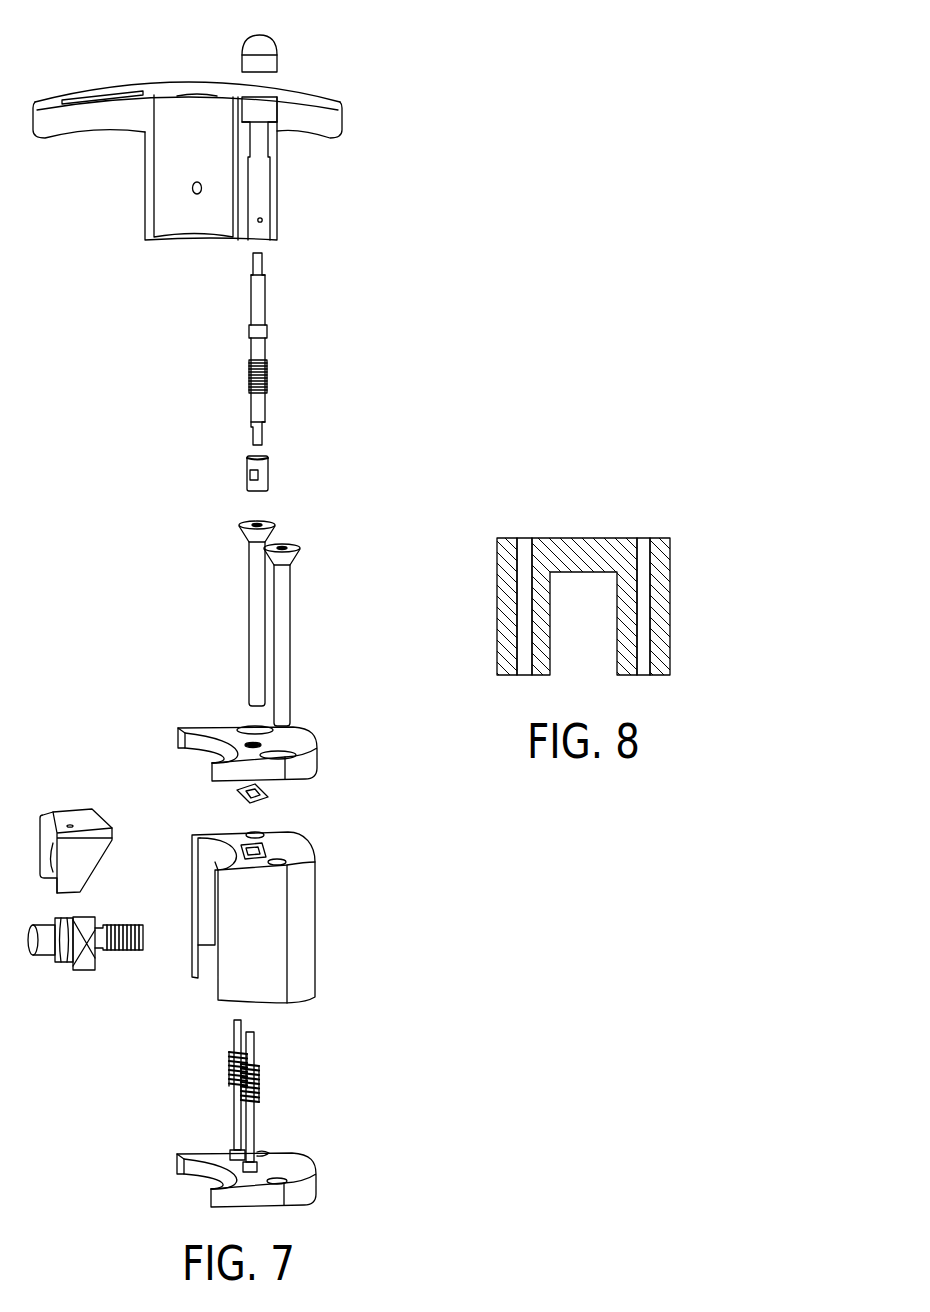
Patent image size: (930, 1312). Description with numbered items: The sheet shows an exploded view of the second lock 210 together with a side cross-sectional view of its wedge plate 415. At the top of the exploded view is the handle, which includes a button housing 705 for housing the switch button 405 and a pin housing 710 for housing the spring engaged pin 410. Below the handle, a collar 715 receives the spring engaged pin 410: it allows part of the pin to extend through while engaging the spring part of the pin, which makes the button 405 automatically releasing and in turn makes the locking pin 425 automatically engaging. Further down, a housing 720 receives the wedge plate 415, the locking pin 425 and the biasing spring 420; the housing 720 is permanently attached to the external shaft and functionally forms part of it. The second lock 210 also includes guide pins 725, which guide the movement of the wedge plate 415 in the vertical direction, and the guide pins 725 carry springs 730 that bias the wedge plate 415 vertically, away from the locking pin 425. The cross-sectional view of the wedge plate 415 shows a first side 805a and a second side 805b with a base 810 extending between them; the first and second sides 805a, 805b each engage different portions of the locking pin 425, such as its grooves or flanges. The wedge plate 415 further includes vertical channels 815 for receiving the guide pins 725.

In FIG. 7, the second lock 210 is at (100, 513).
In FIG. 7, the switch button 405 is at (268, 58).
In FIG. 7, the spring engaged pin 410 is at (260, 310).
In FIG. 7, the wedge plate 415 is at (85, 813).
In FIG. 8, the wedge plate 415 is at (583, 538).
In FIG. 7, the biasing spring 420 is at (125, 950).
In FIG. 7, the locking pin 425 is at (43, 957).
In FIG. 7, the button housing 705 is at (265, 110).
In FIG. 7, the pin housing 710 is at (127, 97).
In FIG. 7, the collar 715 is at (262, 478).
In FIG. 7, the housing 720 is at (307, 912).
In FIG. 7, the guide pins 725 is at (252, 1115).
In FIG. 7, the springs 730 is at (257, 1078).
In FIG. 8, the first side 805a is at (670, 612).
In FIG. 8, the second side 805b is at (497, 612).
In FIG. 8, the base 810 is at (557, 538).
In FIG. 8, the vertical channels 815 is at (645, 523).